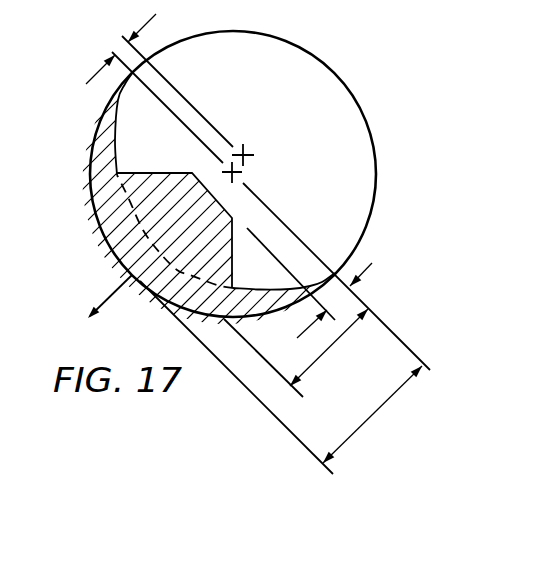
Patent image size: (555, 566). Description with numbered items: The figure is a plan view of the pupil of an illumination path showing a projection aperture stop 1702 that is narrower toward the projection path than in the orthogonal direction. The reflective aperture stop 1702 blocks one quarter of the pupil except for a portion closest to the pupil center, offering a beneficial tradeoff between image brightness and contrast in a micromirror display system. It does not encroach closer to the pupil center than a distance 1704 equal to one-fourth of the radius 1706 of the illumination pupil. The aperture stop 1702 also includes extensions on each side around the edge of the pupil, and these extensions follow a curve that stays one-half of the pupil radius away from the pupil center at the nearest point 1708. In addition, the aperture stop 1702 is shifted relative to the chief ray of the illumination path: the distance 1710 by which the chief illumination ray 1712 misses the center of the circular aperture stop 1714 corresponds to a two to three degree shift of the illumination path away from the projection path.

The projection aperture stop 1702 is at (98, 209).
The distance 1704 is at (367, 264).
The radius of the illumination pupil 1706 is at (370, 414).
The nearest point 1708 is at (333, 345).
The distance 1710 is at (98, 73).
The chief illumination ray 1712 is at (268, 131).
The center of the circular aperture stop 1714 is at (242, 181).